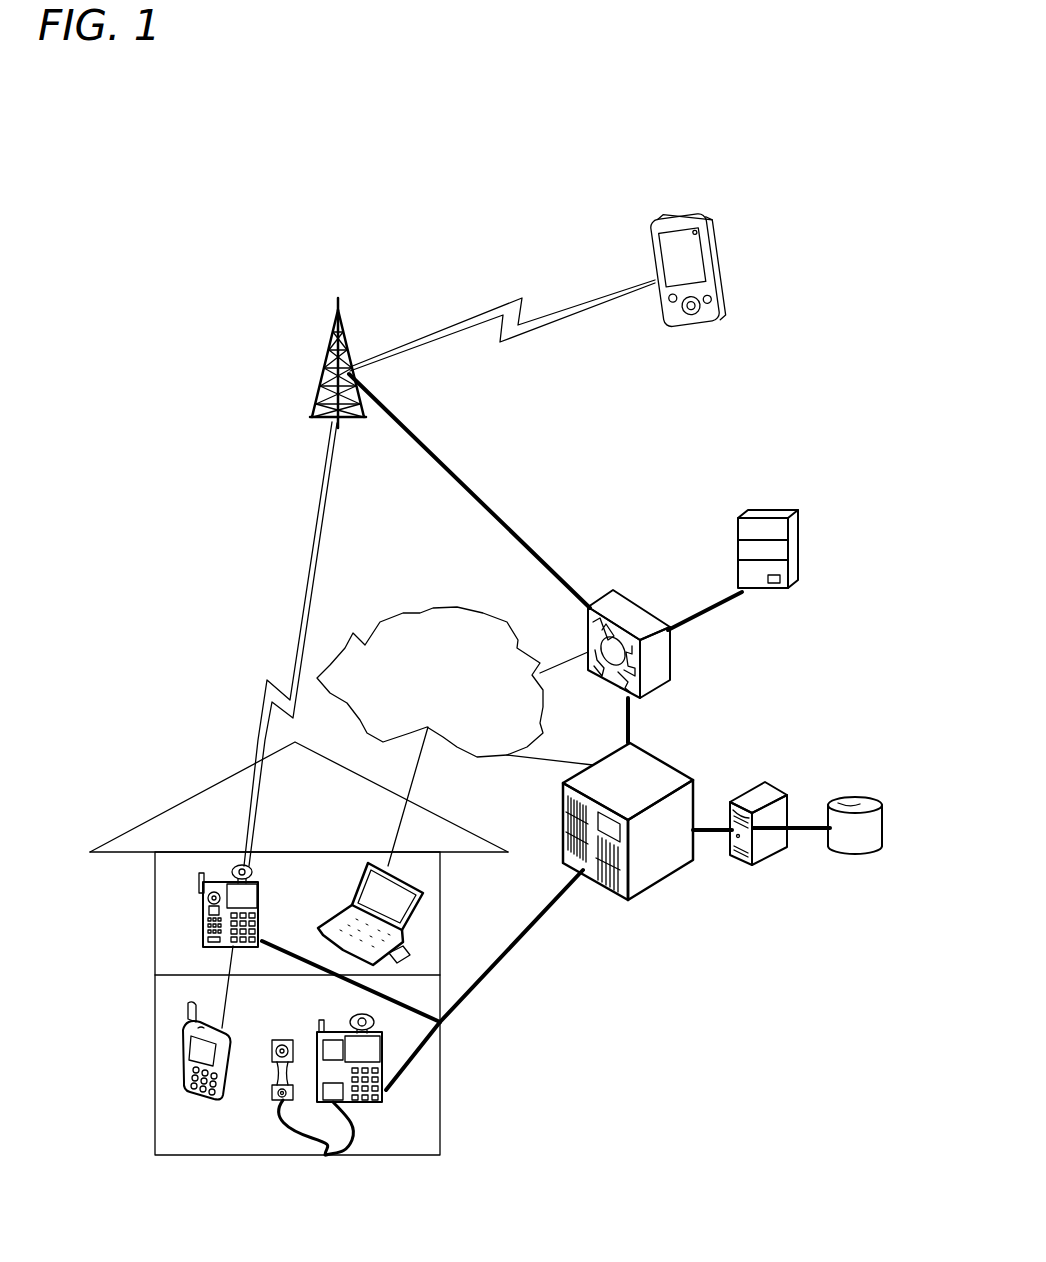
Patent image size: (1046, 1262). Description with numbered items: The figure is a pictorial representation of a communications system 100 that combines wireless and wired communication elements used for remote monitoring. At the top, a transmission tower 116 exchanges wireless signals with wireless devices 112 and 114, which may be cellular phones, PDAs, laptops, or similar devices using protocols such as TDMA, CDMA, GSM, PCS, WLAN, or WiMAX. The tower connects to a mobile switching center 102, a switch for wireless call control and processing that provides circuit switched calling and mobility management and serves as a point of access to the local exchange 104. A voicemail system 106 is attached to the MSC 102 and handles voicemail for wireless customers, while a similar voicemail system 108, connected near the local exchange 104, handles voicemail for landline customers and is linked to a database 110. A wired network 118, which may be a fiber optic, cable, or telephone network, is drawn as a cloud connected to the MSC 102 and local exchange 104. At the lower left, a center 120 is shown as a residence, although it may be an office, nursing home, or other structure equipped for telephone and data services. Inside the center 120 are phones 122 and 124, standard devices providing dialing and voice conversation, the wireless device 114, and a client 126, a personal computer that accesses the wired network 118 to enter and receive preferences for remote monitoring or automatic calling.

The communications system 100 is at (152, 228).
The mobile switching center 102 is at (607, 600).
The local exchange 104 is at (630, 905).
The voicemail system 106 is at (768, 522).
The voicemail system 108 is at (778, 850).
The database 110 is at (852, 797).
The wireless device 112 is at (715, 240).
The wireless device 114 is at (185, 1085).
The transmission tower 116 is at (345, 378).
The wired network 118 is at (452, 710).
The center 120 is at (156, 808).
The phone 122 is at (210, 945).
The phone 124 is at (440, 1110).
The client 126 is at (432, 935).